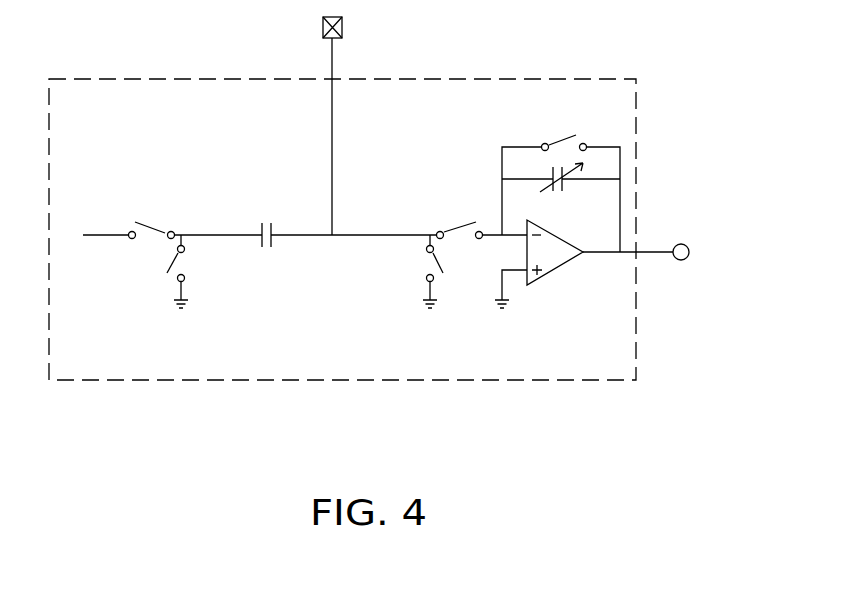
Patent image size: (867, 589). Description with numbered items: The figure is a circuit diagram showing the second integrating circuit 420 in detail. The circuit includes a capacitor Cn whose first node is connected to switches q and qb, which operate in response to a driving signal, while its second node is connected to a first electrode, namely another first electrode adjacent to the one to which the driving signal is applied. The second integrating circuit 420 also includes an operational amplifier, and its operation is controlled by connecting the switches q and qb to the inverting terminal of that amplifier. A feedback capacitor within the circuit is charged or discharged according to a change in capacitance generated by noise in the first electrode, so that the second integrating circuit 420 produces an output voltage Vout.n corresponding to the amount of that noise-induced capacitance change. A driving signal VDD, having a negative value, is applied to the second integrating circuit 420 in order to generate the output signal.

The second integrating circuit 420 is at (521, 79).
The driving signal VDD is at (118, 222).
The switch q is at (296, 271).
The switch qb is at (338, 239).
The capacitor Cn is at (265, 224).
The output voltage Vout.n is at (717, 252).